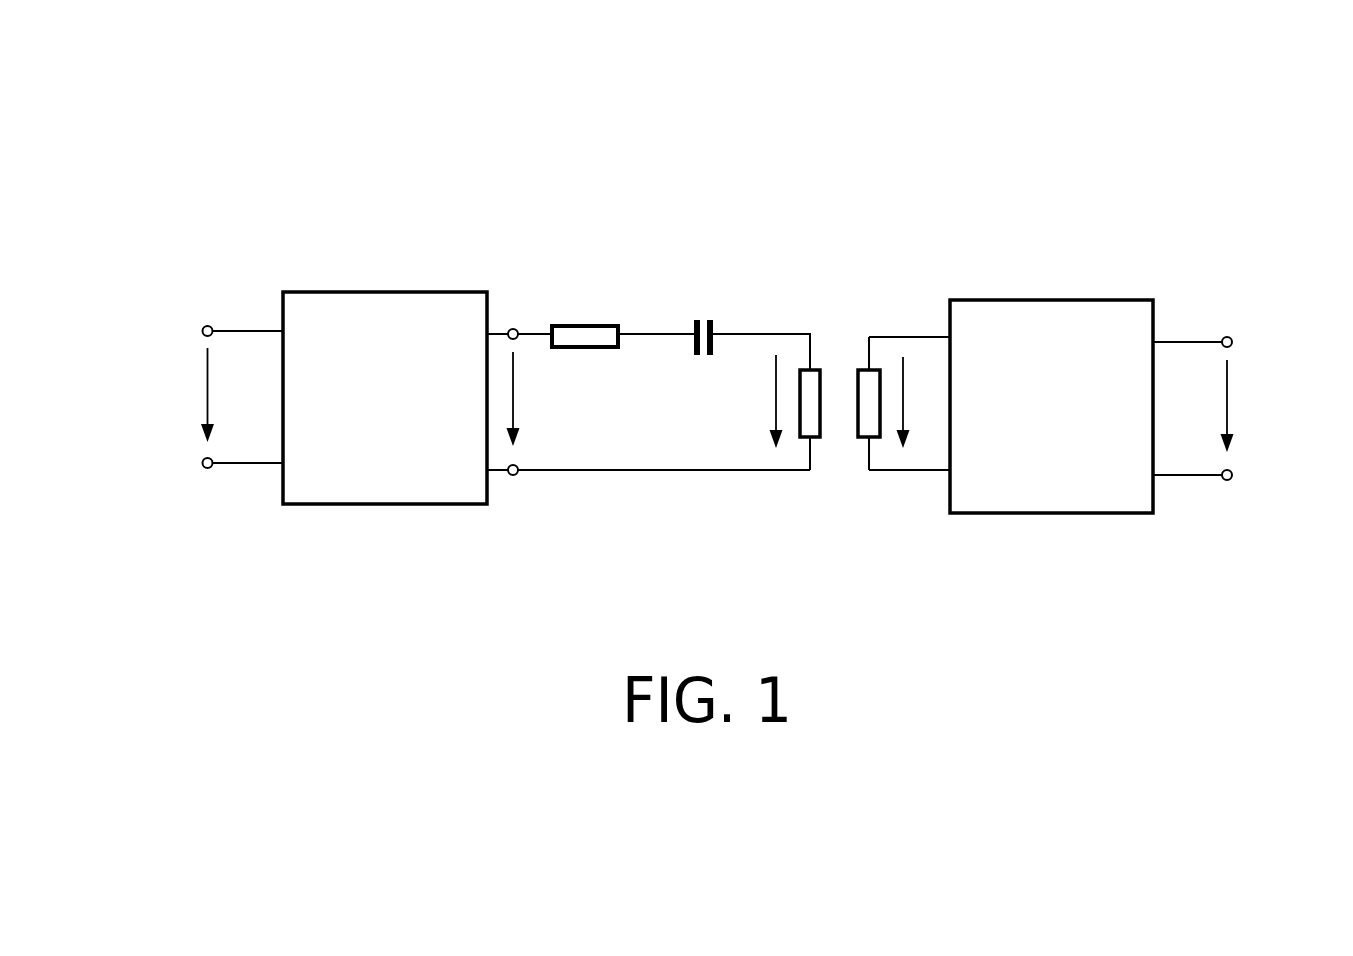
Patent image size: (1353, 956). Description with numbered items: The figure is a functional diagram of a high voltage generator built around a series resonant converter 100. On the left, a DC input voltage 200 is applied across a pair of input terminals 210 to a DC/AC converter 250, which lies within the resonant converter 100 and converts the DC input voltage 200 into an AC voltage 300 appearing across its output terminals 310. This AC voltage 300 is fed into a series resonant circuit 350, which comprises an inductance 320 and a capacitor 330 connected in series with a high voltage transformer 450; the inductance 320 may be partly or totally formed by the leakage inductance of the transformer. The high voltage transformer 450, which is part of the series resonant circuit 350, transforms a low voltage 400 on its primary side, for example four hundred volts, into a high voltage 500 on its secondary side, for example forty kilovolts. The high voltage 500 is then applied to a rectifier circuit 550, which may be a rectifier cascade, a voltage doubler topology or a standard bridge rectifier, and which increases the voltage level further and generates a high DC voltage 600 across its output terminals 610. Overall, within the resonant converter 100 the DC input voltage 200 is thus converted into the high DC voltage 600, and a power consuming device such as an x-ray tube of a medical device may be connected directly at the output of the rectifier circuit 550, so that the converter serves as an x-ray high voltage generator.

The series resonant converter 100 is at (467, 141).
The DC input voltage 200 is at (207, 388).
The DC input terminals 210 is at (208, 325).
The DC/AC converter 250 is at (383, 292).
The AC voltage 300 is at (513, 390).
The converter output terminals 310 is at (513, 328).
The inductance 320 is at (585, 326).
The capacitor 330 is at (696, 320).
The series resonant circuit 350 is at (953, 164).
The low voltage 400 is at (776, 390).
The high voltage transformer 450 is at (839, 487).
The high voltage 500 is at (903, 378).
The rectifier circuit 550 is at (1050, 300).
The high DC voltage 600 is at (1227, 400).
The DC output terminals 610 is at (1227, 336).